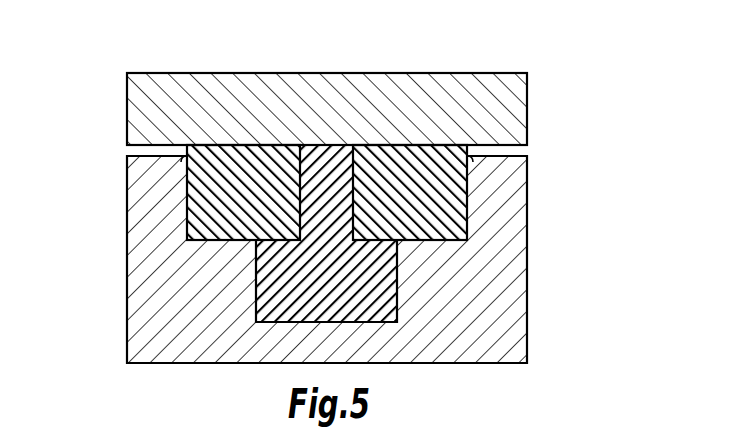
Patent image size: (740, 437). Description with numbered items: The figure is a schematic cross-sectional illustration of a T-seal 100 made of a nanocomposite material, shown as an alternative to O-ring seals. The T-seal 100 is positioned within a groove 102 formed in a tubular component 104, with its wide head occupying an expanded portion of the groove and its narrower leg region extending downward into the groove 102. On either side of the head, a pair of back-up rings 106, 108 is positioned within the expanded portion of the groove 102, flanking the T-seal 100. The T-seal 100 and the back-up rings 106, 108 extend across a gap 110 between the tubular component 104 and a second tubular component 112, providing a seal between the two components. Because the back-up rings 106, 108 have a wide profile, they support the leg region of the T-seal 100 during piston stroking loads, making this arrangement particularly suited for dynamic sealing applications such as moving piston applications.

The T-seal 100 is at (424, 249).
The groove 102 is at (397, 320).
The tubular component 104 is at (513, 190).
The back-up ring 106 is at (249, 146).
The back-up ring 108 is at (412, 146).
The gap 110 is at (138, 152).
The tubular component 112 is at (519, 101).